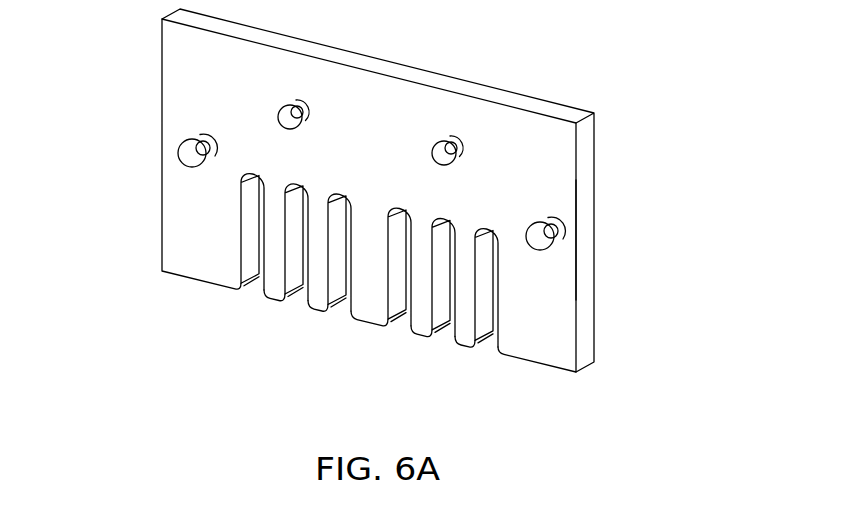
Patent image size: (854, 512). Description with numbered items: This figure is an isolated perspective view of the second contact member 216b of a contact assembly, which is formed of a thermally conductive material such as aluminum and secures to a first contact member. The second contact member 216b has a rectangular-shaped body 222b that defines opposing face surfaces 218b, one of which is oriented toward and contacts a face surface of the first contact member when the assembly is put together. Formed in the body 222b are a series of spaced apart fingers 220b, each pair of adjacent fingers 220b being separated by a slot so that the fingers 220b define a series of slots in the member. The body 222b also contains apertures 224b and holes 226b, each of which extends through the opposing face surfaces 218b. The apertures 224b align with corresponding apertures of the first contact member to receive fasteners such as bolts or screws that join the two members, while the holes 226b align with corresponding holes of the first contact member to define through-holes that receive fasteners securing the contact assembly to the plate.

The second contact member 216b is at (607, 105).
The face surface 218b is at (560, 158).
The fingers 220b is at (468, 338).
The rectangular-shaped body 222b is at (201, 58).
The apertures 224b is at (432, 150).
The holes 226b is at (197, 155).